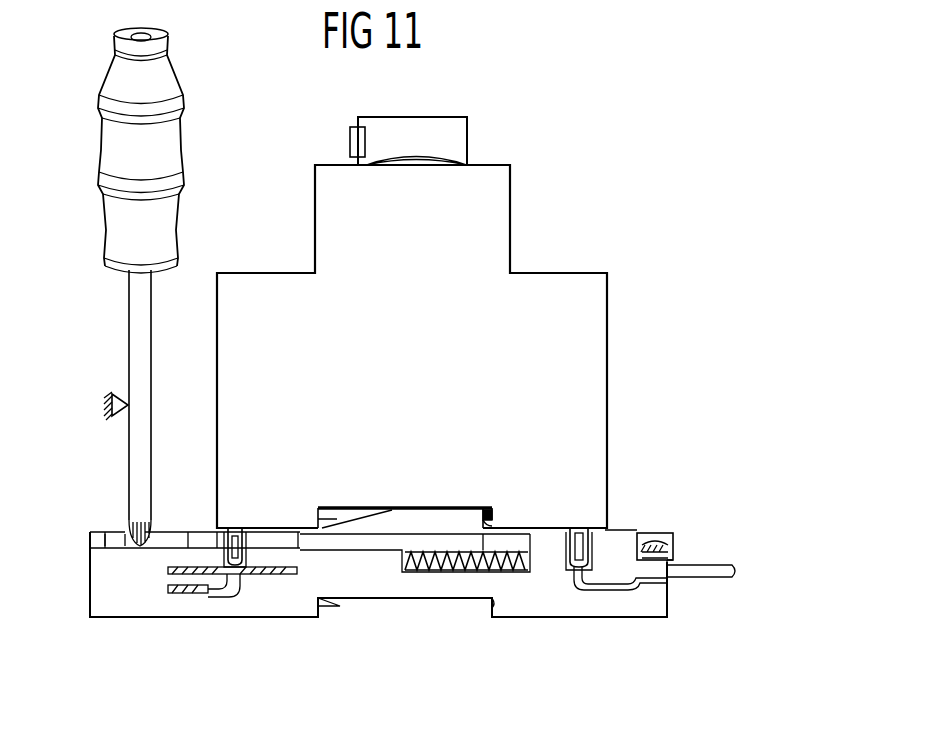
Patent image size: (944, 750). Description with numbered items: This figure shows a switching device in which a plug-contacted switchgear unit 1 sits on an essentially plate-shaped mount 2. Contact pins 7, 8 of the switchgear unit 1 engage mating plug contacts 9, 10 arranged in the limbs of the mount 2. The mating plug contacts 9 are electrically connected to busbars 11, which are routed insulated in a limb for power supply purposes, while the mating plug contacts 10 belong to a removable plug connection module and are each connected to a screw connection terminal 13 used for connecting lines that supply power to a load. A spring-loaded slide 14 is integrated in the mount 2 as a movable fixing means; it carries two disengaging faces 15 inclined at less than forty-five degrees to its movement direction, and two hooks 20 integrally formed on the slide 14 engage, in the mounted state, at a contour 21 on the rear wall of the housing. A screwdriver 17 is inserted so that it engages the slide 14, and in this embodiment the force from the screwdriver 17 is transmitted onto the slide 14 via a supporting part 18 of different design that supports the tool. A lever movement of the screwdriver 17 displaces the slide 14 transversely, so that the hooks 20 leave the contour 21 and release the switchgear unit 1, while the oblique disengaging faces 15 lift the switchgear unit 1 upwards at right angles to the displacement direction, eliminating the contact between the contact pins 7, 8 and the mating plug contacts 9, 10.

The switchgear unit 1 is at (587, 330).
The mount 2 is at (275, 597).
The contact pin 7 is at (235, 527).
The contact pin 8 is at (582, 527).
The mating plug contact 9 is at (210, 548).
The mating plug contact 10 is at (594, 550).
The busbar 11 is at (167, 589).
The screw connection terminal 13 is at (662, 548).
The slide 14 is at (115, 537).
The disengaging face 15 is at (414, 520).
The screwdriver 17 is at (120, 152).
The supporting part 18 is at (108, 405).
The hook 20 is at (486, 522).
The contour 21 is at (492, 521).